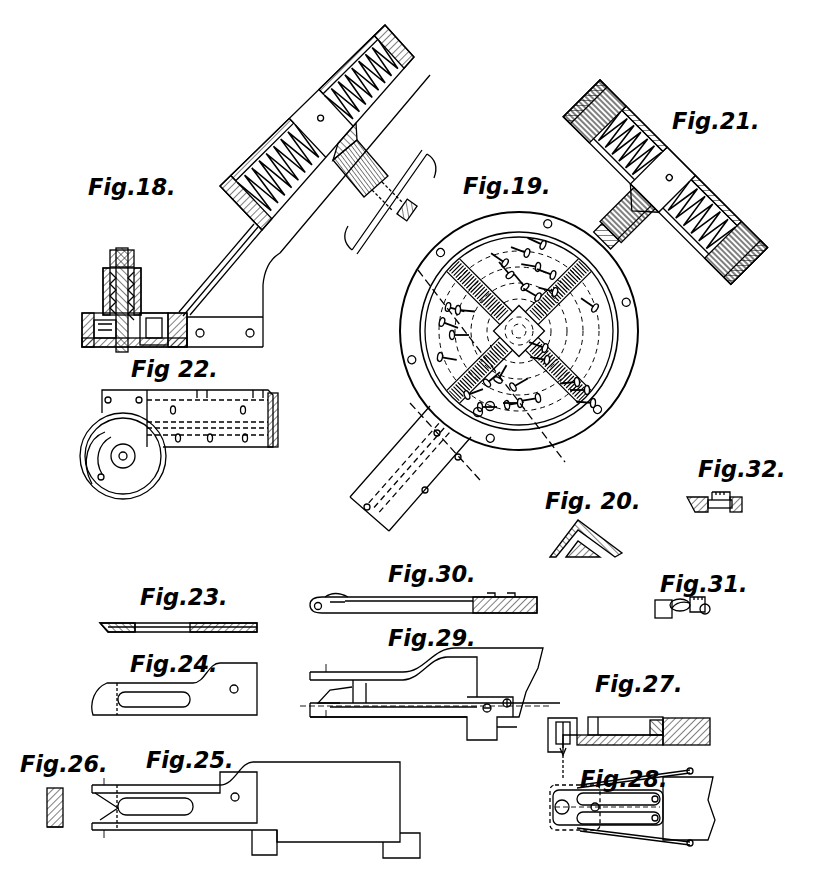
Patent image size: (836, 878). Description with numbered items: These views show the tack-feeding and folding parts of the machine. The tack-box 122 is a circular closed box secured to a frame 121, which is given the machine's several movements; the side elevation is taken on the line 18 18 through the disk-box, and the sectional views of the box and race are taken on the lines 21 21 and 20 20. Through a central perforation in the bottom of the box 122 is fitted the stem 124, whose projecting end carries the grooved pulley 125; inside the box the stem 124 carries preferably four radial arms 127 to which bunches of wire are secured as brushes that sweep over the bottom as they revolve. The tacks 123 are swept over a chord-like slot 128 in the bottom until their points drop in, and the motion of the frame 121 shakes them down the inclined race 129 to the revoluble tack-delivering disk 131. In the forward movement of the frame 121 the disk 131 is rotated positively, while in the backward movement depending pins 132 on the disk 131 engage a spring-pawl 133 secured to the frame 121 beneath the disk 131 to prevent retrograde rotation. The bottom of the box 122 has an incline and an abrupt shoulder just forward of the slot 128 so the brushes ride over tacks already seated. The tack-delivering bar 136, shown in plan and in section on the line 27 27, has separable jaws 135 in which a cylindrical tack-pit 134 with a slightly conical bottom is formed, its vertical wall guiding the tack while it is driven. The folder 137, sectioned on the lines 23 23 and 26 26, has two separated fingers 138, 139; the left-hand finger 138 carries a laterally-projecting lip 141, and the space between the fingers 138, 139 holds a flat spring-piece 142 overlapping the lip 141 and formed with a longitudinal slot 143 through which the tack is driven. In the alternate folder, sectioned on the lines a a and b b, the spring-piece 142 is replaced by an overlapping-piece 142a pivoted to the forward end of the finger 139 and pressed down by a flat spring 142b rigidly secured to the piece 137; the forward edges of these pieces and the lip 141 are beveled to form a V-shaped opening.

In FIG. 22, the section line 18 18 is at (84, 456).
In FIG. 19, the section line 20 20 is at (440, 434).
In FIG. 19, the section line 21 21 is at (491, 359).
In FIG. 24, the section line 23 23 is at (95, 697).
In FIG. 25, the section line 26 26 is at (94, 802).
In FIG. 28, the section line 27 27 is at (550, 807).
In FIG. 29, the section line a a is at (420, 700).
In FIG. 29, the section line b b is at (329, 696).
In FIG. 18, the frame 121 is at (266, 289).
In FIG. 19, the frame 121 is at (383, 460).
In FIG. 21, the frame 121 is at (617, 194).
In FIG. 22, the frame 121 is at (241, 385).
In FIG. 18, the box 122 is at (382, 39).
In FIG. 19, the box 122 is at (646, 309).
In FIG. 21, the box 122 is at (739, 281).
In FIG. 19, the tacks 123 is at (548, 364).
In FIG. 20, the tacks 123 is at (588, 553).
In FIG. 27, the tacks 123 is at (565, 721).
In FIG. 18, the stem 124 is at (417, 211).
In FIG. 21, the stem 124 is at (617, 242).
In FIG. 18, the grooved pulley 125 is at (373, 231).
In FIG. 18, the radial arms 127 is at (266, 168).
In FIG. 19, the radial arms 127 is at (478, 300).
In FIG. 21, the radial arms 127 is at (703, 185).
In FIG. 19, the slot 128 is at (489, 410).
In FIG. 20, the slot 128 is at (597, 556).
In FIG. 18, the race 129 is at (221, 259).
In FIG. 19, the race 129 is at (414, 505).
In FIG. 22, the race 129 is at (284, 424).
In FIG. 18, the tack-delivering disk 131 is at (103, 314).
In FIG. 18, the depending pins 132 is at (150, 316).
In FIG. 18, the spring-pawl 133 is at (86, 335).
In FIG. 22, the spring-pawl 133 is at (105, 478).
In FIG. 29, the tack-pit 134 is at (510, 722).
In FIG. 27, the tack-pit 134 is at (544, 741).
In FIG. 27, the separable jaws 135 is at (637, 715).
In FIG. 28, the separable jaws 135 is at (621, 807).
In FIG. 27, the tack-delivering bar 136 is at (693, 718).
In FIG. 28, the tack-delivering bar 136 is at (689, 808).
In FIG. 29, the folder 137 is at (426, 694).
In FIG. 25, the folder 137 is at (256, 810).
In FIG. 32, the projecting end portion 138 is at (690, 510).
In FIG. 31, the projecting end portion 138 is at (650, 610).
In FIG. 30, the projecting end portion 138 is at (423, 604).
In FIG. 29, the projecting end portion 138 is at (363, 667).
In FIG. 25, the projecting end portion 138 is at (135, 779).
In FIG. 26, the projecting end portion 138 is at (54, 788).
In FIG. 32, the projecting end portion 139 is at (740, 508).
In FIG. 31, the projecting end portion 139 is at (704, 605).
In FIG. 29, the projecting end portion 139 is at (366, 723).
In FIG. 25, the projecting end portion 139 is at (135, 836).
In FIG. 26, the projecting end portion 139 is at (56, 834).
In FIG. 25, the lip 141 is at (90, 804).
In FIG. 24, the spring-piece 142 is at (174, 689).
In FIG. 23, the spring-piece 142 is at (235, 619).
In FIG. 25, the spring-piece 142 is at (226, 807).
In FIG. 32, the overlapping-piece 142a is at (718, 508).
In FIG. 31, the overlapping-piece 142a is at (681, 612).
In FIG. 30, the overlapping-piece 142a is at (339, 597).
In FIG. 29, the overlapping-piece 142a is at (333, 702).
In FIG. 30, the flat spring 142b is at (453, 596).
In FIG. 29, the flat spring 142b is at (430, 710).
In FIG. 24, the longitudinal slot 143 is at (154, 699).
In FIG. 23, the longitudinal slot 143 is at (133, 632).
In FIG. 25, the longitudinal slot 143 is at (155, 807).